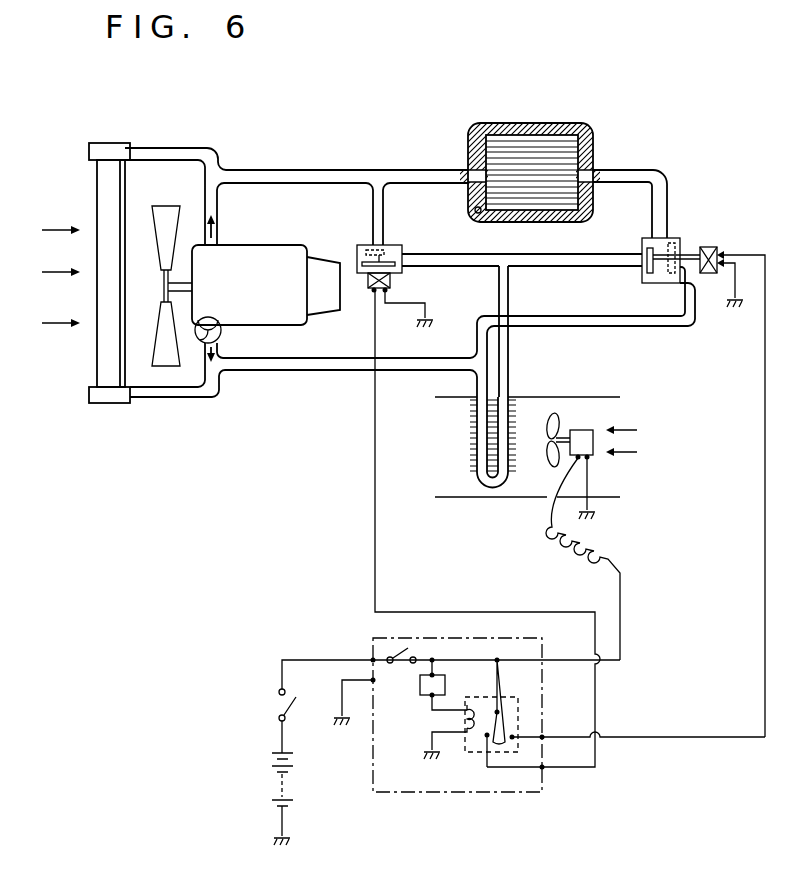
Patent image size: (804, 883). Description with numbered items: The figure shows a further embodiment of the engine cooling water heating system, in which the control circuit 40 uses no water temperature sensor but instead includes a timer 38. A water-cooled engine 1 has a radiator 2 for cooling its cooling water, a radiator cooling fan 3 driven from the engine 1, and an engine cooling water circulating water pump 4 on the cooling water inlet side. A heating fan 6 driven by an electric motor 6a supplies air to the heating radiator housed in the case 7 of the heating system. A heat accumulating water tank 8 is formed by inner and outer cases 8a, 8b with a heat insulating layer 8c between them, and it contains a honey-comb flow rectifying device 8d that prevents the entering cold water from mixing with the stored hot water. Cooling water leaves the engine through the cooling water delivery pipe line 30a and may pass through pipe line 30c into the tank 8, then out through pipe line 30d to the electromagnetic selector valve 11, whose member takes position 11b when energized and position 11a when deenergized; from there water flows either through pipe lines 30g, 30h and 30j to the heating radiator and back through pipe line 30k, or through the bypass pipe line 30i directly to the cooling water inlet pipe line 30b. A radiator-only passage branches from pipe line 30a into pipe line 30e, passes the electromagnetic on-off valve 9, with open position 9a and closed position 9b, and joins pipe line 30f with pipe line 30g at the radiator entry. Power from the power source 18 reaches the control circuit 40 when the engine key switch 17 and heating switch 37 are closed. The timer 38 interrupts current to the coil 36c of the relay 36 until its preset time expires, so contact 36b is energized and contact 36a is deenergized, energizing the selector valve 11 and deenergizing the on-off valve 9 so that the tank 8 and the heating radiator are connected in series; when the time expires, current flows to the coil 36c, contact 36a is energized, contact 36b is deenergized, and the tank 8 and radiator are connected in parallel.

The water-cooled engine 1 is at (266, 245).
The radiator 2 is at (100, 143).
The radiator cooling fan 3 is at (161, 206).
The engine cooling water circulating water pump 4 is at (221, 336).
The heating fan 6 is at (550, 423).
The electric motor 6a is at (580, 430).
The case for heating system 7 is at (608, 396).
The heat accumulating water tank 8 is at (530, 169).
The inner case 8a is at (468, 205).
The outer case 8b is at (477, 213).
The heat insulating layer 8c is at (588, 217).
The honey-comb flow rectifying device 8d is at (543, 203).
The electromagnetic on-off valve 9 is at (392, 271).
The open position 9a is at (395, 277).
The closed position 9b is at (386, 250).
The electromagnetic selector valve 11 is at (713, 246).
The deenergized position 11a is at (661, 275).
The energized position 11b is at (673, 241).
The engine key switch 17 is at (276, 709).
The power source 18 is at (270, 761).
The cooling water delivery pipe line 30a is at (317, 170).
The cooling water inlet pipe line 30b is at (322, 383).
The pipe line 30c is at (450, 166).
The pipe line 30d is at (626, 157).
The pipe line 30e is at (372, 207).
The pipe line 30f is at (483, 267).
The pipe line 30g is at (575, 267).
The pipe line 30h is at (510, 270).
The pipe line 30i is at (577, 327).
The pipe line 30j is at (510, 372).
The pipe line 30k is at (477, 383).
The relay 36 is at (594, 723).
The contact 36a is at (482, 738).
The contact 36b is at (520, 734).
The coil 36c is at (470, 693).
The heating switch 37 is at (400, 664).
The timer 38 is at (418, 697).
The control circuit 40 is at (549, 702).